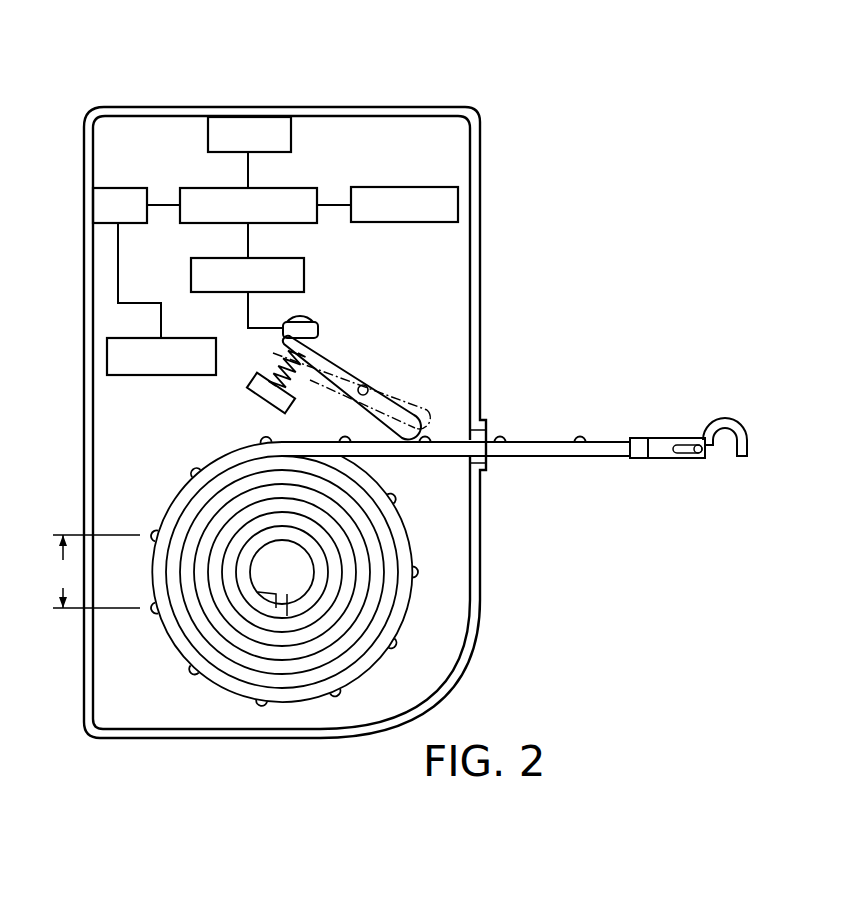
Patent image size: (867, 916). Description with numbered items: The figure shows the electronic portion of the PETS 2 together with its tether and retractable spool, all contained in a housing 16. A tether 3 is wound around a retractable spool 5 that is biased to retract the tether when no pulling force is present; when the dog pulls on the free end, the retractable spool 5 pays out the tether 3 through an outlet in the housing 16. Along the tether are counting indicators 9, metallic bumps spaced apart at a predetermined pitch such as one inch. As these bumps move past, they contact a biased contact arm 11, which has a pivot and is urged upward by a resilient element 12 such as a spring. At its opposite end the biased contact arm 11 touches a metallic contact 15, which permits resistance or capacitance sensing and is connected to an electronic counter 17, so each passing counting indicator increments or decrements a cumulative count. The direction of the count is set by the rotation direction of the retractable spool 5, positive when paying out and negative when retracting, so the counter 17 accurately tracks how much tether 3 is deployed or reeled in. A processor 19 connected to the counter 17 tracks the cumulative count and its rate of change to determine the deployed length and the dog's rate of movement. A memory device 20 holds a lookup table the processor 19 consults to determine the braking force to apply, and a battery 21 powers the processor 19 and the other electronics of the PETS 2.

The PETS 2 is at (306, 74).
The tether 3 is at (573, 456).
The retractable spool 5 is at (258, 592).
The counting indicators 9 is at (189, 469).
The biased contact arm 11 is at (378, 400).
The resilient element 12 is at (255, 368).
The contact 15 is at (318, 331).
The housing 16 is at (480, 278).
The counter 17 is at (305, 276).
The processor 19 is at (282, 188).
The memory device 20 is at (407, 222).
The battery 21 is at (133, 375).